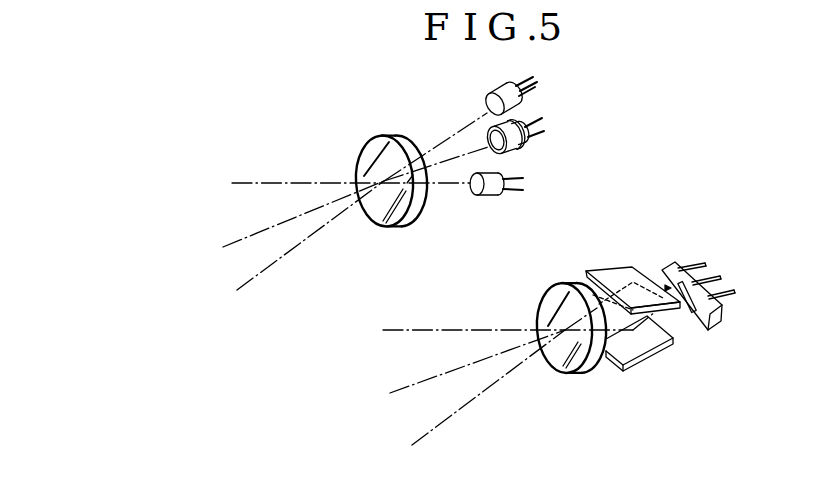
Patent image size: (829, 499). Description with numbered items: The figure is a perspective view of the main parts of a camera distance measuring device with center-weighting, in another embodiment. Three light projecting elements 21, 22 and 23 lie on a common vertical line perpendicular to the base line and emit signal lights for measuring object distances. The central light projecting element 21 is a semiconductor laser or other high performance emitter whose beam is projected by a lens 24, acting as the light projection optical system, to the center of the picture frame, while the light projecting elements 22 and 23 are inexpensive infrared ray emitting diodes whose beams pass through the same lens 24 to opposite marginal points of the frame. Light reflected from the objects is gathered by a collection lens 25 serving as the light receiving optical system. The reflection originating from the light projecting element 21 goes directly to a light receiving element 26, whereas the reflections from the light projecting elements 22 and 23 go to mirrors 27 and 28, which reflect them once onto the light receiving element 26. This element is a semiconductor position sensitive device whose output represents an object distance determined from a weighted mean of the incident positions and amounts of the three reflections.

The central light projecting element 21 is at (510, 153).
The light projecting element 22 is at (488, 90).
The light projecting element 23 is at (490, 198).
The lens 24 is at (390, 228).
The collection lens 25 is at (574, 374).
The light receiving element 26 is at (713, 330).
The mirror 27 is at (617, 268).
The mirror 28 is at (647, 347).